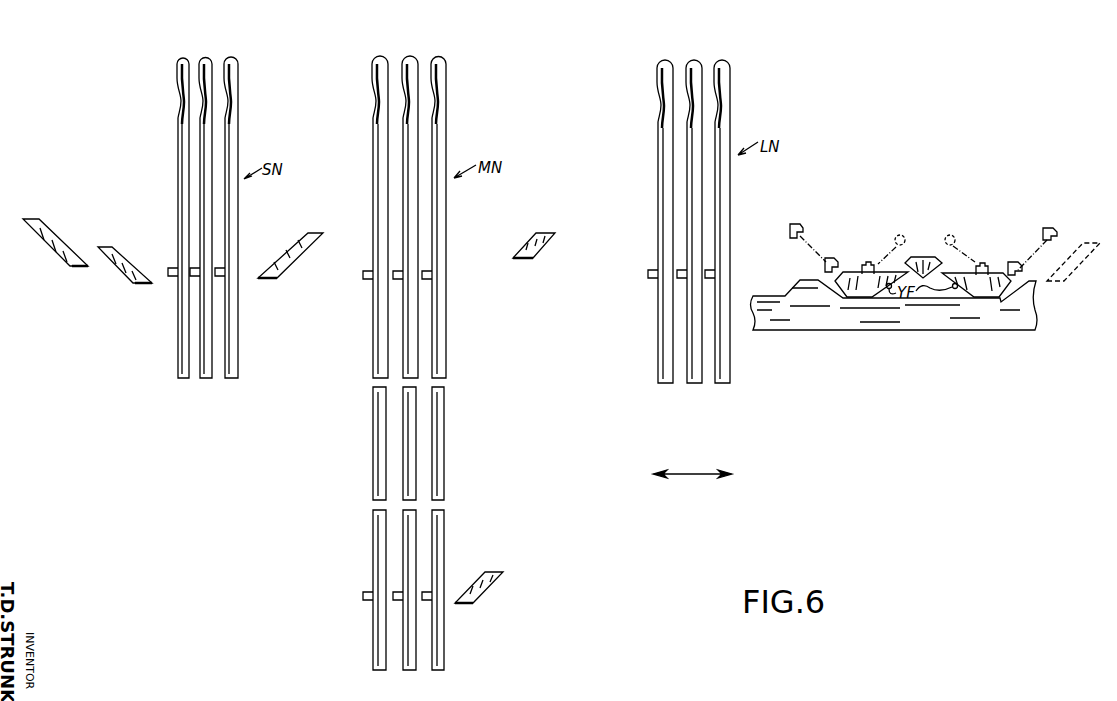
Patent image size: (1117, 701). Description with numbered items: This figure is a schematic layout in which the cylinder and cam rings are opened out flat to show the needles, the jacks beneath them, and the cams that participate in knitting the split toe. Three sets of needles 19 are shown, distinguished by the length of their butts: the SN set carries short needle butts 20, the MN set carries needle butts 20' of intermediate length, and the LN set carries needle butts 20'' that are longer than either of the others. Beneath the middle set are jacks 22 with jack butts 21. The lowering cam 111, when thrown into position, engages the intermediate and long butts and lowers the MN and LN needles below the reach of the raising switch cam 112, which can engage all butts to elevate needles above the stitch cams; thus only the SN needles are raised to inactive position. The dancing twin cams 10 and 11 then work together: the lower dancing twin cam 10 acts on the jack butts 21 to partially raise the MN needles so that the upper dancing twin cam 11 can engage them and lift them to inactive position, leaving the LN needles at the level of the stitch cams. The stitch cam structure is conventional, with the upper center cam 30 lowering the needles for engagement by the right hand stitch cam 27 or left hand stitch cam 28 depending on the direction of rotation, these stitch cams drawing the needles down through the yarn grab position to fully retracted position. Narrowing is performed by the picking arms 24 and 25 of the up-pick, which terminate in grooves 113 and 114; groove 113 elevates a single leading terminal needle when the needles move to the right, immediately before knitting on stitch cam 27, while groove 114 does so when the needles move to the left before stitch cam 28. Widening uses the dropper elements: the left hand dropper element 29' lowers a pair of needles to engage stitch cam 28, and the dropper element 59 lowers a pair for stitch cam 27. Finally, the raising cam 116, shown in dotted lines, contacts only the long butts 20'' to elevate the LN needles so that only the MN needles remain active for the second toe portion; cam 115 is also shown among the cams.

The needle 19 is at (240, 158).
The short needle butt 20 is at (185, 262).
The intermediate needle butt 20' is at (378, 285).
The long needle butt 20'' is at (650, 280).
The jack butt 21 is at (362, 596).
The jack 22 is at (438, 537).
The lower dancing twin cam 10 is at (503, 581).
The upper dancing twin cam 11 is at (532, 246).
The lowering cam 111 is at (110, 247).
The raising switch cam 112 is at (306, 234).
The cam 115 is at (33, 219).
The raising cam 116 is at (1081, 266).
The picking arm 24 is at (870, 262).
The picking arm 25 is at (980, 262).
The right hand stitch cam 27 is at (985, 298).
The left hand stitch cam 28 is at (863, 297).
The upper center cam 30 is at (935, 247).
The dropper element 59 is at (799, 224).
The left hand dropper element 29' is at (1040, 235).
The up-pick groove 113 is at (867, 262).
The up-pick groove 114 is at (987, 264).